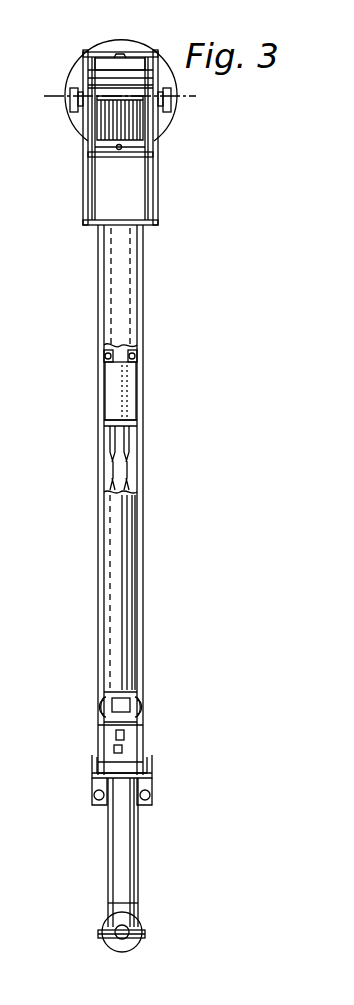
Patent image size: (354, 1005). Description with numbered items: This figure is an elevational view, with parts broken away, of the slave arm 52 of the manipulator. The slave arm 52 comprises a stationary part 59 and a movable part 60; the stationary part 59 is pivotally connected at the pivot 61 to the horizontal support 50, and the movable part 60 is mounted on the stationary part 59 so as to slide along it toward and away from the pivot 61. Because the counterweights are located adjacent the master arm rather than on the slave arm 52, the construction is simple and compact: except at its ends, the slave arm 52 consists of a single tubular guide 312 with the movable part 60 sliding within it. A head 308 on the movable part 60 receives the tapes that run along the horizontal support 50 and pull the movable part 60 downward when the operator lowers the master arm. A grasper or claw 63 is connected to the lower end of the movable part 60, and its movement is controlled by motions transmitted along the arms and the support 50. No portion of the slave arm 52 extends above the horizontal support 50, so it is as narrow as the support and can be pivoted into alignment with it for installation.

The horizontal support 50 is at (168, 118).
The pivot 61 is at (63, 97).
The slave arm 52 is at (157, 293).
The head 308 is at (110, 401).
The tubular guide 312 is at (113, 540).
The stationary part 59 is at (145, 605).
The movable part 60 is at (141, 852).
The grasper or claw 63 is at (101, 937).